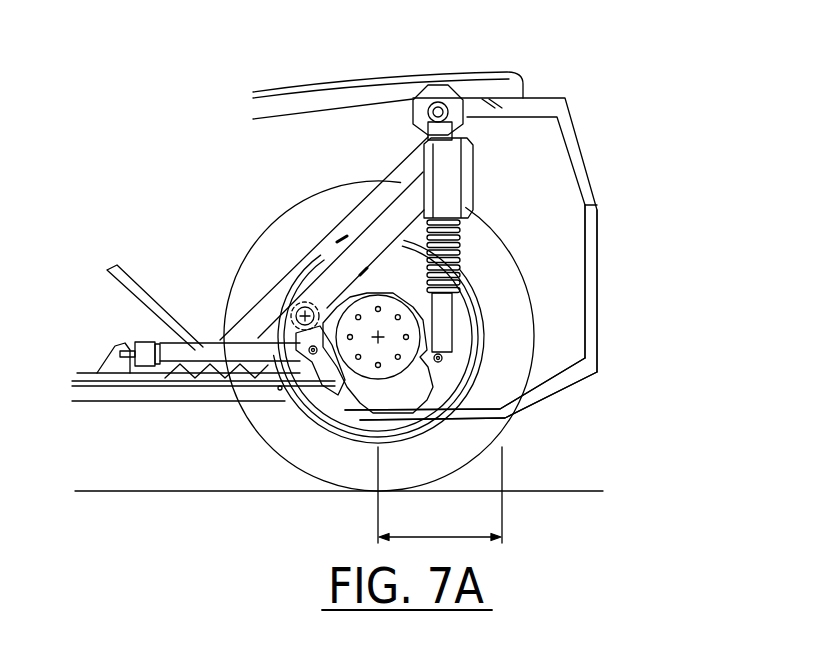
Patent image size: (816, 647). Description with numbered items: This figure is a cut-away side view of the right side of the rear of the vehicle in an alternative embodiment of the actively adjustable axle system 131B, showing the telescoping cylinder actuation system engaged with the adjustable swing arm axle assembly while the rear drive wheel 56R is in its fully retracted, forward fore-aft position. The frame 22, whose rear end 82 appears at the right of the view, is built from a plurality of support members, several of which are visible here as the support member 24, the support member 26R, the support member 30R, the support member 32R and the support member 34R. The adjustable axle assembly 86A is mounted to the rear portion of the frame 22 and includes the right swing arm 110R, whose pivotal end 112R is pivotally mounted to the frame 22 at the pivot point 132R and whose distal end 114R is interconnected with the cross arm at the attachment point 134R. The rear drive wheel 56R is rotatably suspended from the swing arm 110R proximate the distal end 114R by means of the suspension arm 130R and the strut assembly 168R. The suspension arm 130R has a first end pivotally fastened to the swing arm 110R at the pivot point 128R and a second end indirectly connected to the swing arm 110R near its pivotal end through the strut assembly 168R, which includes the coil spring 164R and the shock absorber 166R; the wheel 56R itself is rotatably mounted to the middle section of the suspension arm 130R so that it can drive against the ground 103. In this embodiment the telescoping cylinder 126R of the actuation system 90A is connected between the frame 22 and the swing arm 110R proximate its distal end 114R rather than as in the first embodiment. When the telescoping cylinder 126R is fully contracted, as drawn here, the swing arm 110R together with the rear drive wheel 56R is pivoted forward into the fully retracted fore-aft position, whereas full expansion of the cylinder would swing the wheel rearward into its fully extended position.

The frame 22 is at (362, 74).
The support member 24 is at (292, 97).
The support member 26R is at (557, 383).
The support member 30R is at (127, 283).
The support member 32R is at (280, 290).
The support member 34R is at (590, 226).
The right rear drive wheel 56R is at (303, 445).
The rear end 82 is at (645, 143).
The adjustable axle assembly 86A is at (200, 100).
The actuation system 90A is at (178, 245).
The ground 103 is at (117, 491).
The right swing arm 110R is at (407, 212).
The right pivotal end 112R is at (440, 127).
The right distal end 114R is at (317, 363).
The right telescoping cylinder 126R is at (193, 350).
The pivot point 128R is at (300, 345).
The right suspension arm 130R is at (442, 362).
The actively adjustable axle system 131B is at (632, 52).
The pivot point 132R is at (441, 102).
The attachment point 134R is at (381, 495).
The right coil spring 164R is at (462, 230).
The right shock absorber 166R is at (440, 323).
The right strut assembly 168R is at (470, 263).